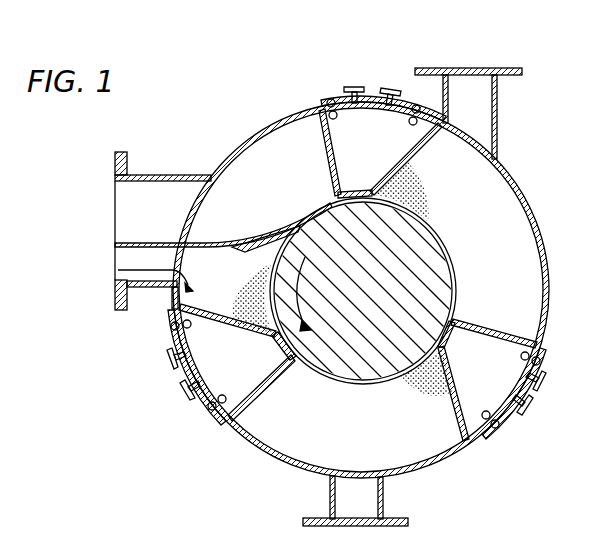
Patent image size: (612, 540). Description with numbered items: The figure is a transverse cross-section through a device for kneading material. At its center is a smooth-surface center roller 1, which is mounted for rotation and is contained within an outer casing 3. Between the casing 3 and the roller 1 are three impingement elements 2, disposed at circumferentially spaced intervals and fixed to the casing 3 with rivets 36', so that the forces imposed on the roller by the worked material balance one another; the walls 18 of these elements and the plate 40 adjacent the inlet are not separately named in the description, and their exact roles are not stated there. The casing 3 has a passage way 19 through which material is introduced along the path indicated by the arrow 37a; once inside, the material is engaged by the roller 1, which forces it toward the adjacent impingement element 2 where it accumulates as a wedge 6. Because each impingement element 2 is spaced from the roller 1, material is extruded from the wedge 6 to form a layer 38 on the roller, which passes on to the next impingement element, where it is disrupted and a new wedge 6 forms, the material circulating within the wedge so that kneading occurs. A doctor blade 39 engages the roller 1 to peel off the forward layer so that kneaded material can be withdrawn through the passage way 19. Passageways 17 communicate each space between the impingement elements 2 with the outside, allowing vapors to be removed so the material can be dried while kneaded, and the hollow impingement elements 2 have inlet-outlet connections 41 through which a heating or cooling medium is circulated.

The center roller 1 is at (402, 252).
The impingement element 2 is at (327, 150).
The outer casing 3 is at (549, 238).
The wedge 6 is at (410, 180).
The passageway 17 is at (523, 72).
The partition wall 18 is at (336, 130).
The passage way 19 is at (116, 162).
The rivets 36' is at (383, 263).
The arrow 37a is at (110, 272).
The layer 38 is at (452, 250).
The doctor blade 39 is at (245, 250).
The guide plate 40 is at (112, 243).
The inlet-outlet connections 41 is at (390, 88).